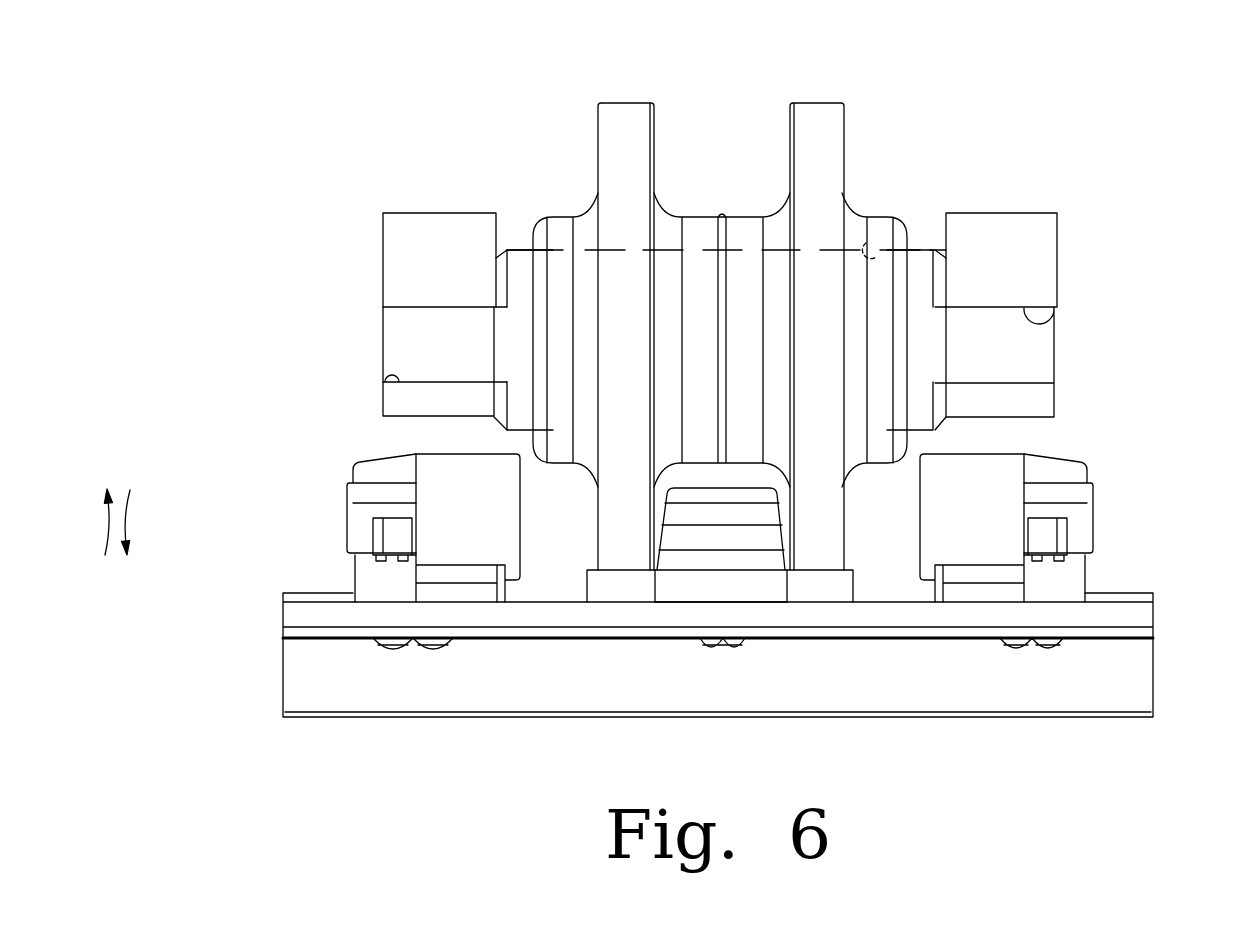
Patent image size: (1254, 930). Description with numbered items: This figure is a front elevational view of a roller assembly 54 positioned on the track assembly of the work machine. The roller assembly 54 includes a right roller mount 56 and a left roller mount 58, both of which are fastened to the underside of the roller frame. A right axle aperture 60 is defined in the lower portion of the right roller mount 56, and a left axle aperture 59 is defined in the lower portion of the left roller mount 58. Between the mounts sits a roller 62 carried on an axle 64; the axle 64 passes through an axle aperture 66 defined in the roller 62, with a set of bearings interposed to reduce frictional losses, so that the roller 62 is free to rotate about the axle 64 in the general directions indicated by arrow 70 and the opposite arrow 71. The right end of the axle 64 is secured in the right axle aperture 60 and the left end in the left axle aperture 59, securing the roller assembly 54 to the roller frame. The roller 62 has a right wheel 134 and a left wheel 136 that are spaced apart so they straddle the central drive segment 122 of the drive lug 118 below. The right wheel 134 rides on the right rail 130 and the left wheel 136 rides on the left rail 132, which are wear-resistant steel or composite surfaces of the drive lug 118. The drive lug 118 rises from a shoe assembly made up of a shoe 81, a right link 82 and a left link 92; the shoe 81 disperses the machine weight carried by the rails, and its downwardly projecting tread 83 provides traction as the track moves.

The roller assembly 54 is at (500, 128).
The right roller mount 56 is at (398, 243).
The left roller mount 58 is at (1045, 237).
The left axle aperture 59 is at (1050, 323).
The right axle aperture 60 is at (388, 378).
The roller 62 is at (721, 168).
The axle 64 is at (398, 325).
The axle aperture 66 is at (872, 252).
The arrow 70 is at (128, 520).
The opposite rotation direction 71 is at (95, 530).
The shoe 81 is at (1137, 615).
The right link 82 is at (448, 460).
The tread 83 is at (1137, 678).
The left link 92 is at (980, 463).
The drive lug 118 is at (731, 575).
The central drive segment 122 is at (710, 525).
The right rail 130 is at (618, 585).
The left rail 132 is at (820, 595).
The right wheel 134 is at (628, 113).
The left wheel 136 is at (810, 113).